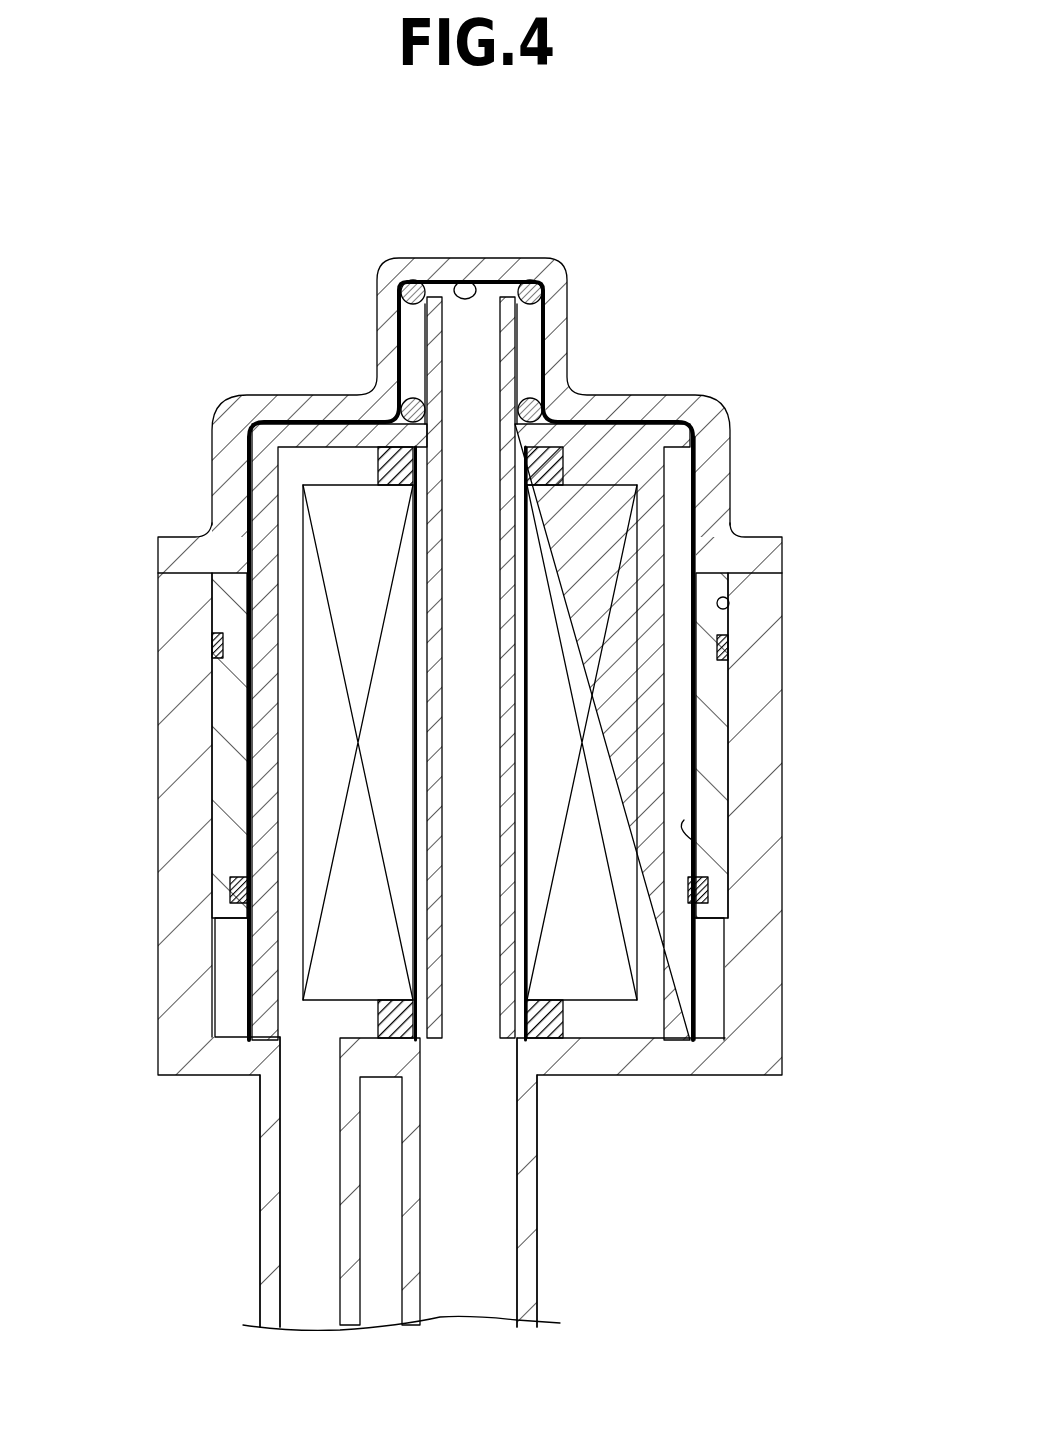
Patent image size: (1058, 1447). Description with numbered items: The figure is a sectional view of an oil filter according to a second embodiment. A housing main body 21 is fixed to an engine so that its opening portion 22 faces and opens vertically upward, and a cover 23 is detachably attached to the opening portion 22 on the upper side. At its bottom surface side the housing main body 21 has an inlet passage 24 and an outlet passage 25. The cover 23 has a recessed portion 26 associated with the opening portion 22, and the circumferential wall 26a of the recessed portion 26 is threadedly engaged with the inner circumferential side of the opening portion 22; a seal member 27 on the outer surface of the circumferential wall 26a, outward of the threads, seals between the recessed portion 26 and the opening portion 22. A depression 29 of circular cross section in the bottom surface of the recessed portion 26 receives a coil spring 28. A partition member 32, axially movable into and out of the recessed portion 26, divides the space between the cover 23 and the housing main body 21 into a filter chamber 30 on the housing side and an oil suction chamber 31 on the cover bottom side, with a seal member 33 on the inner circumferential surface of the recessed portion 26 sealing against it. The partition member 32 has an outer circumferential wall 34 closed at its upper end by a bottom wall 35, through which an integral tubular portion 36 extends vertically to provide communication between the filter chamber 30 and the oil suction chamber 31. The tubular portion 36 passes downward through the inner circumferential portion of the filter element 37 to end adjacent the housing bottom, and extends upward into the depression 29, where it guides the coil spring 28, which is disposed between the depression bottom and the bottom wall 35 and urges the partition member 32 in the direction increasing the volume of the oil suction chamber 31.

The housing main body 21 is at (768, 680).
The opening portion 22 is at (729, 602).
The cover 23 is at (737, 495).
The inlet passage 24 is at (298, 1187).
The outlet passage 25 is at (498, 1187).
The recessed portion 26 is at (690, 840).
The circumferential wall 26a is at (708, 795).
The seal member 27 is at (211, 641).
The coil spring 28 is at (545, 290).
The depression 29 is at (457, 283).
The filter chamber 30 is at (290, 492).
The oil suction chamber 31 is at (385, 407).
The partition member 32 is at (704, 742).
The seal member 33 is at (708, 888).
The outer circumferential wall 34 is at (265, 781).
The bottom wall 35 is at (300, 435).
The tubular portion 36 is at (432, 932).
The filter element 37 is at (332, 972).